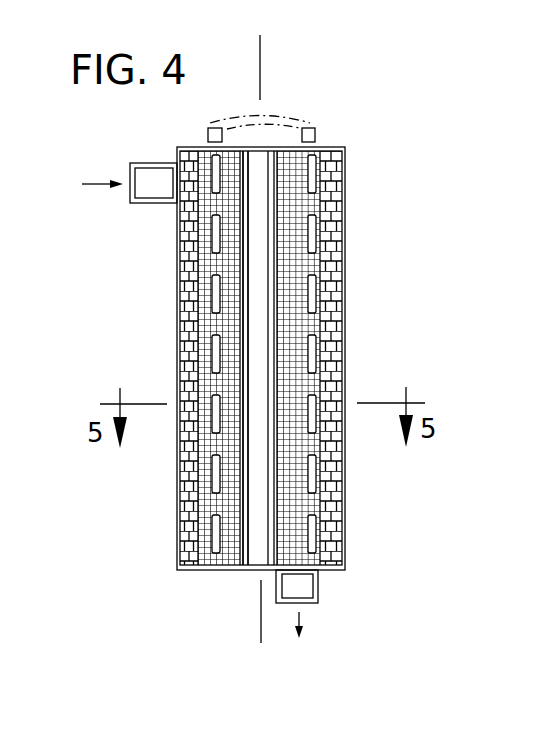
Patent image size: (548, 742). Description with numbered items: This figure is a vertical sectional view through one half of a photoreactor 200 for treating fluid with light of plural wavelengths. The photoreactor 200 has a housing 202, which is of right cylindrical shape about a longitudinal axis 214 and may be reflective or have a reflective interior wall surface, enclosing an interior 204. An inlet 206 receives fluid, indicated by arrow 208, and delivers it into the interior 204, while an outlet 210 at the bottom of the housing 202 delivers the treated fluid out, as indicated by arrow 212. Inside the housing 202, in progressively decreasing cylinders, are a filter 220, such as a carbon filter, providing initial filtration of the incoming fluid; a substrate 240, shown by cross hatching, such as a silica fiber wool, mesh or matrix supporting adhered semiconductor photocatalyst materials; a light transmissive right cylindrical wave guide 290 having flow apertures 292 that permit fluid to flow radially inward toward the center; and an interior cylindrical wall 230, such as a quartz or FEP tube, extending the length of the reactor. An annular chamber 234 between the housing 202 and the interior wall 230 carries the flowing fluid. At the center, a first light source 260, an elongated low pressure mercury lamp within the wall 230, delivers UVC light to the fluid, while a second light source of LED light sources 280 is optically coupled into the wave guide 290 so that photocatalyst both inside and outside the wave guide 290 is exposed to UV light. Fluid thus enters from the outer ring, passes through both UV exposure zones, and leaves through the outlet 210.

The photoreactor 200 is at (364, 215).
The housing 202 is at (346, 287).
The interior 204 is at (223, 557).
The inlet 206 is at (162, 164).
The arrow 208 is at (100, 185).
The outlet 210 is at (318, 585).
The arrow 212 is at (303, 618).
The longitudinal axis 214 is at (260, 72).
The filter 220 is at (340, 253).
The interior cylindrical wall 230 is at (280, 332).
The annular chamber 234 is at (308, 203).
The substrate 240 is at (300, 380).
The first light source 260 is at (262, 477).
The LED light sources 280 is at (316, 131).
The wave guide 290 is at (314, 163).
The flow apertures 292 is at (311, 505).